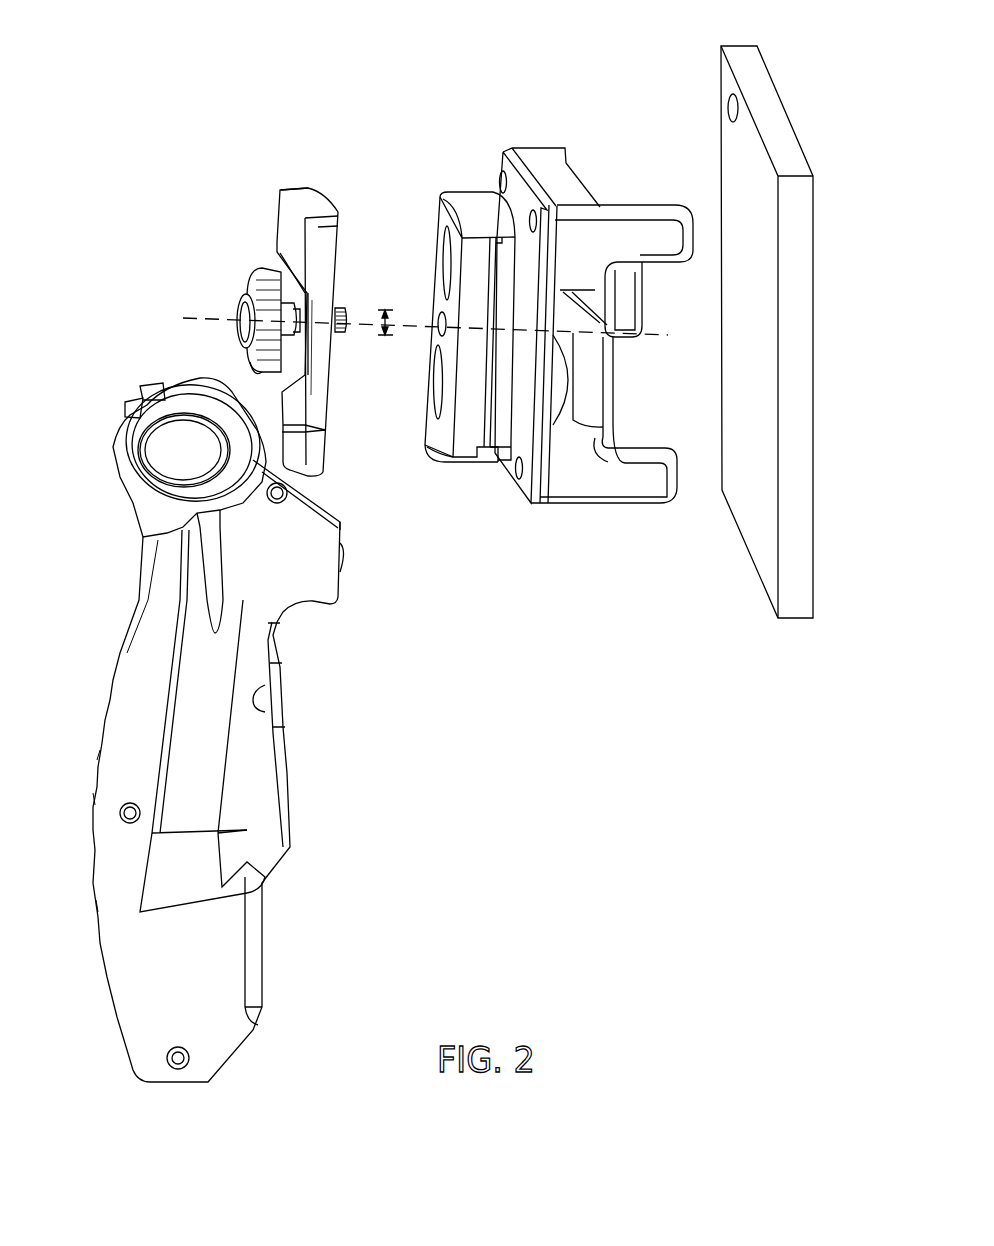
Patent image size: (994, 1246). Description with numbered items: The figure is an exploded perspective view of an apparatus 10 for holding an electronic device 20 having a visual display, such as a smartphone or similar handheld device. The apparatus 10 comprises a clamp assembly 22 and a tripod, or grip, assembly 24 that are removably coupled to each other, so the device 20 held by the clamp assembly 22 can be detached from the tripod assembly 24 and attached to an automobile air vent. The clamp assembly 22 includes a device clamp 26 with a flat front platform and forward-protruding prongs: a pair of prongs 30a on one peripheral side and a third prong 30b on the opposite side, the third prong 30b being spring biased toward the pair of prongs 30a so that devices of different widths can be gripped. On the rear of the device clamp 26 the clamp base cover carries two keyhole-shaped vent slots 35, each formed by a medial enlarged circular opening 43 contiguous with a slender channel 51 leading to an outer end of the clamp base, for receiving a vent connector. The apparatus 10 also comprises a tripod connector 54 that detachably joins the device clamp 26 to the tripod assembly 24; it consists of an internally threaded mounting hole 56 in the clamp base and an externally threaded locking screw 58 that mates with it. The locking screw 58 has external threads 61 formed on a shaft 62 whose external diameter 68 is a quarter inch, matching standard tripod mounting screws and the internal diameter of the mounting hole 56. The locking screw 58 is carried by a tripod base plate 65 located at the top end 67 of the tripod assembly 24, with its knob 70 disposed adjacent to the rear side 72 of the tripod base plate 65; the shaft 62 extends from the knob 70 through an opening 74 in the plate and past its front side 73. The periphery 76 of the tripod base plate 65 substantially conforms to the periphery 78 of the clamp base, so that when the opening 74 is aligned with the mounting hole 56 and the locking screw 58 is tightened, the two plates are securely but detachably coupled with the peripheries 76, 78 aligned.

The apparatus 10 is at (160, 104).
The electronic device 20 is at (766, 26).
The clamp assembly 22 is at (602, 106).
The tripod assembly 24 is at (114, 376).
The device clamp 26 is at (610, 227).
The pair of prongs 30a is at (680, 473).
The third prong 30b is at (645, 303).
The vent slot 35 is at (445, 243).
The enlarged circular opening 43 is at (440, 280).
The slender channel 51 is at (438, 397).
The tripod connector 54 is at (505, 487).
The mounting hole 56 is at (437, 324).
The locking screw 58 is at (245, 297).
The external threads 61 is at (347, 321).
The shaft 62 is at (300, 320).
The tripod base plate 65 is at (318, 187).
The top end 67 is at (284, 187).
The external diameter 68 is at (390, 333).
The knob 70 is at (252, 370).
The rear side 72 is at (292, 223).
The front side 73 is at (333, 428).
The opening 74 is at (290, 306).
The periphery 76 is at (317, 400).
The periphery 78 is at (467, 443).